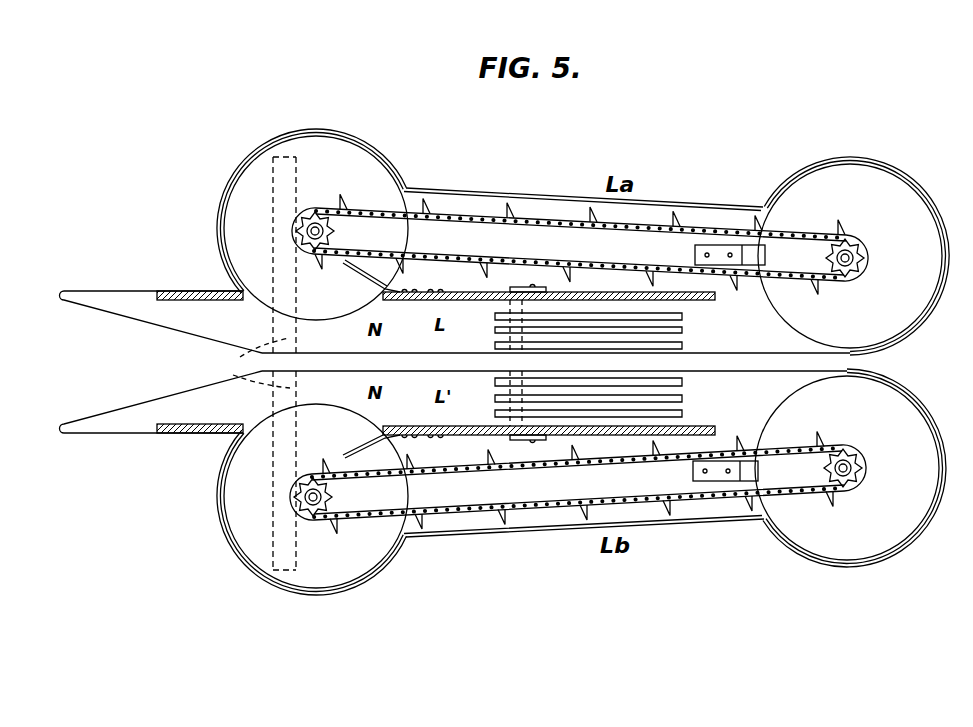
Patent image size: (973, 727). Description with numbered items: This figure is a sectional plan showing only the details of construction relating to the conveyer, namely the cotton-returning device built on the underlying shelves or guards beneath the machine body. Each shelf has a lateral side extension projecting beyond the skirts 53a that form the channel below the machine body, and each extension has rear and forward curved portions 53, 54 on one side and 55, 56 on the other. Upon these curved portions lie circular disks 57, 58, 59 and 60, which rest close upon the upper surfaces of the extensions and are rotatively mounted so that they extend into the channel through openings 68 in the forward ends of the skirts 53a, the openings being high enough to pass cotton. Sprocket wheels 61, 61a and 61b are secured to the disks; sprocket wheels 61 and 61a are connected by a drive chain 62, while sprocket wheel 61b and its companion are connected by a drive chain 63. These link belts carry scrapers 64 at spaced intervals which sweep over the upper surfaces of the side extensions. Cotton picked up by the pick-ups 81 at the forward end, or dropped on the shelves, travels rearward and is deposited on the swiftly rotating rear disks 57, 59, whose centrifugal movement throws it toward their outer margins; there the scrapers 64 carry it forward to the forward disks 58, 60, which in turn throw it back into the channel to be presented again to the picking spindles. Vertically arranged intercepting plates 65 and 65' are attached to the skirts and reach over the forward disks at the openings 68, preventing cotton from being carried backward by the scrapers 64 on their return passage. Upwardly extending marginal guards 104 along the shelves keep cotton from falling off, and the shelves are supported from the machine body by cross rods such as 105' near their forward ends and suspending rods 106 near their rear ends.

The curved portion 53 is at (852, 160).
The skirt 53a is at (716, 302).
The curved portion 54 is at (318, 133).
The curved portion 55 is at (846, 566).
The curved portion 56 is at (329, 596).
The circular disk 57 is at (850, 256).
The circular disk 58 is at (316, 244).
The circular disk 59 is at (847, 468).
The circular disk 60 is at (316, 479).
The sprocket wheel 61 is at (863, 255).
The sprocket wheel 61a is at (300, 229).
The sprocket wheel 61b is at (862, 468).
The drive chain 62 is at (600, 256).
The drive chain 63 is at (612, 470).
The scraper 64 is at (590, 212).
The intercepting plate 65 is at (363, 442).
The deflector bar 65' is at (366, 277).
The opening 68 is at (249, 301).
The pick-up 81 is at (158, 358).
The marginal guard 104 is at (384, 163).
The passage 105' is at (249, 363).
The suspending rod 106 is at (768, 253).